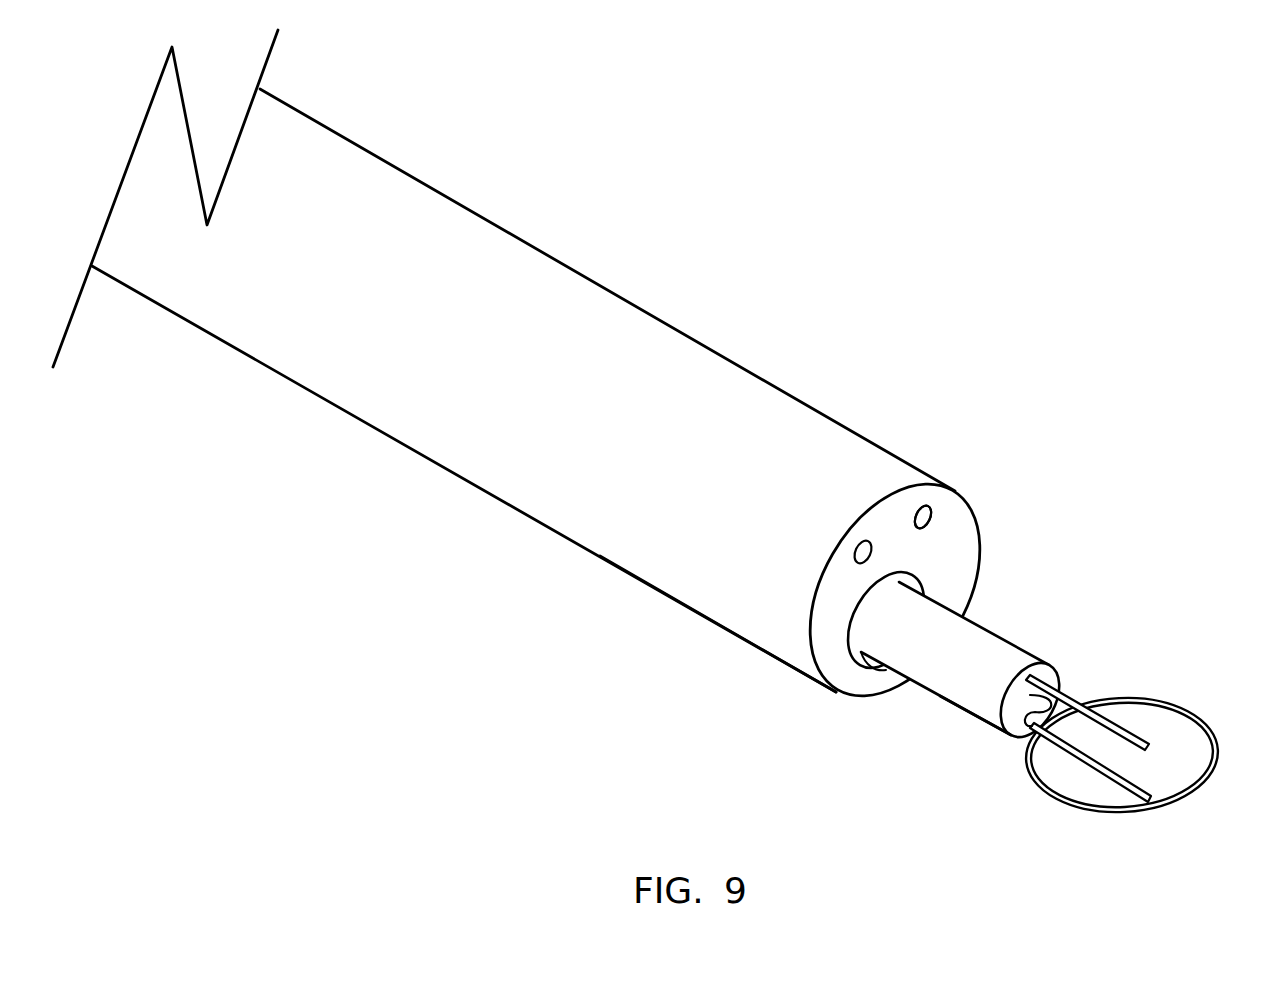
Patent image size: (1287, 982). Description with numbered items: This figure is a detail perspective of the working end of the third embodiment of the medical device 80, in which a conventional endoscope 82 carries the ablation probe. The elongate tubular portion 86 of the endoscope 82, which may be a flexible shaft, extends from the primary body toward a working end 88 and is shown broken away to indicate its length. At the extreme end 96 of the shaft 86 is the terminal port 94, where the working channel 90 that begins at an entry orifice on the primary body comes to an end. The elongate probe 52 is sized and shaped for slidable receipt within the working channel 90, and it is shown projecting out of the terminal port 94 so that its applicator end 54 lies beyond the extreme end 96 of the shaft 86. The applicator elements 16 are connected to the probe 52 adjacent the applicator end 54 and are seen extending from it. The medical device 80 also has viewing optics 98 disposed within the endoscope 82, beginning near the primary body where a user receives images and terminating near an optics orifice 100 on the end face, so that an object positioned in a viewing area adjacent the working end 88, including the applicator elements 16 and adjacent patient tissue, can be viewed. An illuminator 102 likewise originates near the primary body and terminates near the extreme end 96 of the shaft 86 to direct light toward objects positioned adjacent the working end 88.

The medical device 80 is at (1107, 208).
The endoscope 82 is at (553, 190).
The tubular portion 86 is at (513, 388).
The working end 88 is at (740, 578).
The working channel 90 is at (890, 668).
The terminal port 94 is at (933, 516).
The extreme end 96 is at (838, 693).
The viewing optics 98 is at (923, 570).
The optics orifice 100 is at (917, 508).
The illuminator 102 is at (862, 549).
The elongate probe 52 is at (960, 674).
The applicator end 54 is at (985, 703).
The applicator elements 16 is at (1108, 657).